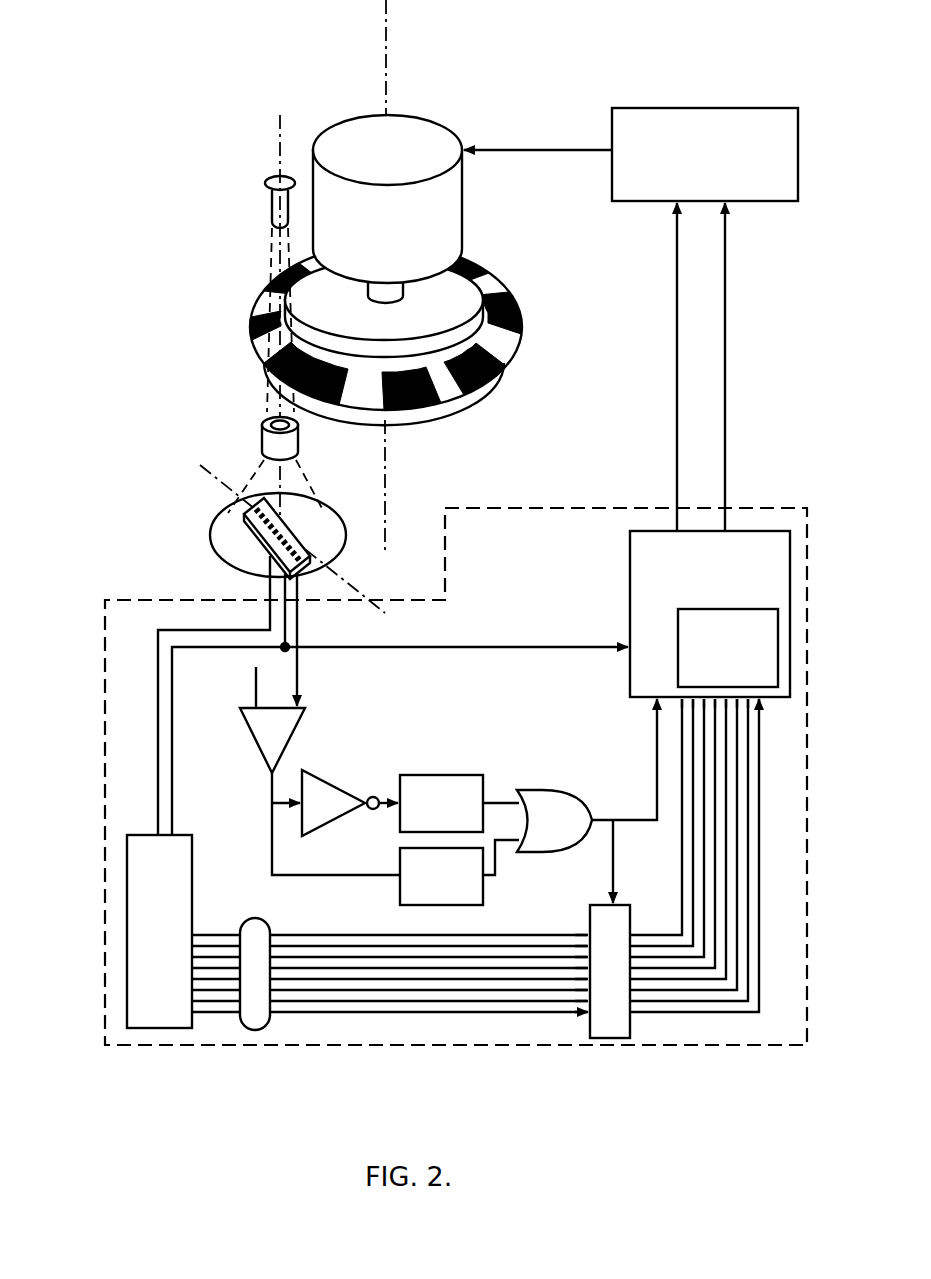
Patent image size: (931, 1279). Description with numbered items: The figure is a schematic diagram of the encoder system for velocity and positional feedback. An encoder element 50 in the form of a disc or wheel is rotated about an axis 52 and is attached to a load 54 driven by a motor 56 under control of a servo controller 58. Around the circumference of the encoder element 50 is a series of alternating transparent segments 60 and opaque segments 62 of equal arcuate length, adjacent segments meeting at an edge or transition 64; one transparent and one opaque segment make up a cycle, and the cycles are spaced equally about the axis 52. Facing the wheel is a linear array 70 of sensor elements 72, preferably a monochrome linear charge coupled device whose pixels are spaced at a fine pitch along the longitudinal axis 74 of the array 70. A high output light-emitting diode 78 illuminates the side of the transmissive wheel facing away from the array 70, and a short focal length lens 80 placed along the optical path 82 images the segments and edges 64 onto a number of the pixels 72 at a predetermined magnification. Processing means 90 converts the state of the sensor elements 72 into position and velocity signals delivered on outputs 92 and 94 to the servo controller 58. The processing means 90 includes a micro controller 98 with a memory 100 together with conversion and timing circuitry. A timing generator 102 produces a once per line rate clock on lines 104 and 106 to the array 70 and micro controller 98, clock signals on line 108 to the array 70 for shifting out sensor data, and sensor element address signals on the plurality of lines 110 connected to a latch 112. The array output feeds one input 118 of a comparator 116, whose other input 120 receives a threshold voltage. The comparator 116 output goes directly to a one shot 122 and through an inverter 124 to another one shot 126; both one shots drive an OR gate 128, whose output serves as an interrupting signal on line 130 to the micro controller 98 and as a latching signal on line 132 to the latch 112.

The encoder element 50 is at (373, 348).
The axis 52 is at (390, 58).
The load 54 is at (460, 300).
The motor 56 is at (445, 200).
The servo controller 58 is at (775, 108).
The transparent segment 60 is at (513, 341).
The opaque segment 62 is at (523, 302).
The edge or transition 64 is at (474, 374).
The array of sensor elements 70 is at (228, 536).
The sensor elements 72 is at (272, 548).
The longitudinal axis 74 is at (198, 466).
The light-emitting diode 78 is at (270, 206).
The lens 80 is at (262, 445).
The optical path 82 is at (277, 387).
The processing means 90 is at (775, 508).
The output 92 is at (677, 466).
The output 94 is at (728, 427).
The micro controller 98 is at (706, 614).
The memory 100 is at (779, 621).
The timing generator 102 is at (186, 835).
The line 104 is at (296, 626).
The line 106 is at (490, 647).
The line 108 is at (196, 628).
The plurality of lines 110 is at (256, 918).
The latch 112 is at (590, 908).
The comparator 116 is at (289, 771).
The comparator input 118 is at (300, 681).
The comparator input 120 is at (255, 681).
The one shot 122 is at (400, 858).
The inverter 124 is at (335, 787).
The one shot 126 is at (441, 775).
The OR gate 128 is at (540, 790).
The line 130 is at (608, 806).
The line 132 is at (614, 862).